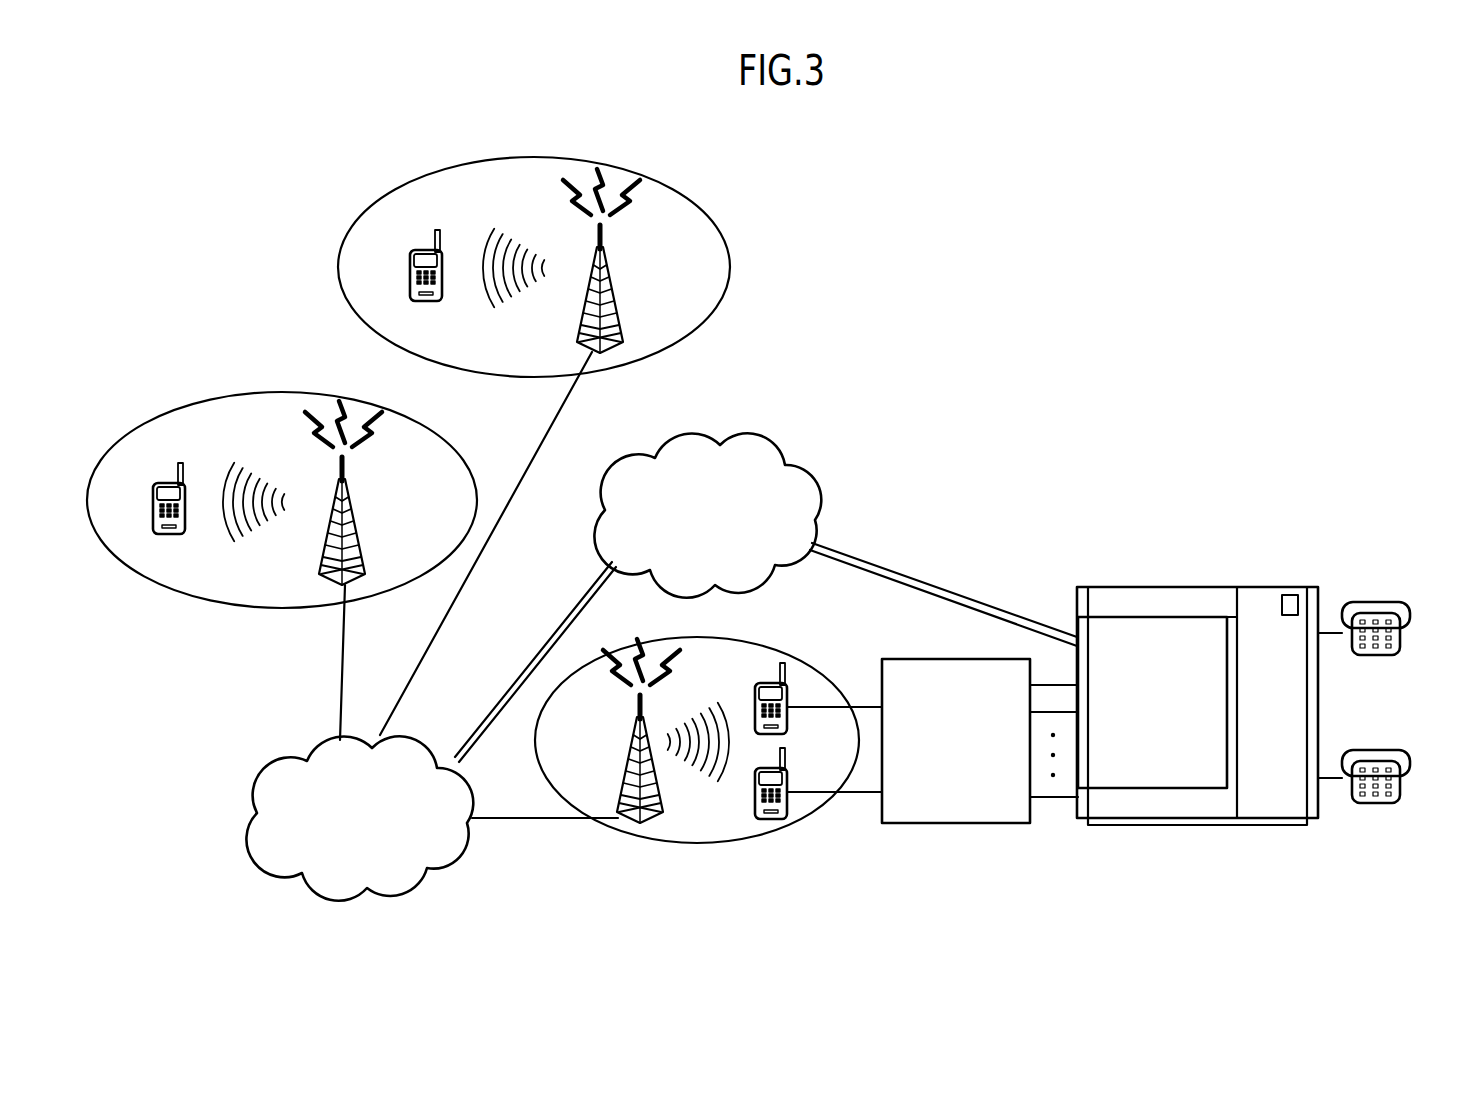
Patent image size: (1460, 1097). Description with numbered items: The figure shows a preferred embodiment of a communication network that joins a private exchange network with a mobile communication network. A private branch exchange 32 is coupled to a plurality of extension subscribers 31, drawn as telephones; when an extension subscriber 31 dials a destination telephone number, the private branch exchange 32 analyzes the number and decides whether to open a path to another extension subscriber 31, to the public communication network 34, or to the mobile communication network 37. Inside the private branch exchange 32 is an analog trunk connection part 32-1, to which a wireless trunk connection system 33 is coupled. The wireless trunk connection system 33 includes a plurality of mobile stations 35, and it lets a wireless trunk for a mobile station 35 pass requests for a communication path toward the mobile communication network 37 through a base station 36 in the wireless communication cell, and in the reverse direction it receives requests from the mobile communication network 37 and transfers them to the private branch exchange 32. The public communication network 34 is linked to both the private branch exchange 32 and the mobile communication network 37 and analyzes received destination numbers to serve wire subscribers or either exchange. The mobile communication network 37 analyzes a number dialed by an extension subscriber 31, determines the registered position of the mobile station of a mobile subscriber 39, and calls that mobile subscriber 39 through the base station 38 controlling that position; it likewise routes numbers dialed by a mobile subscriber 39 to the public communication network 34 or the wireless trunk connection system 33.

The extension subscriber 31 is at (1408, 782).
The private branch exchange 32 is at (1197, 696).
The analog trunk connection part 32-1 is at (1155, 790).
The wireless trunk connection system 33 is at (973, 823).
The public communication network 34 is at (752, 438).
The mobile station 35 is at (786, 692).
The base station 36 is at (648, 828).
The mobile communication network 37 is at (255, 790).
The base station 38 is at (582, 297).
The mobile subscriber 39 is at (183, 470).